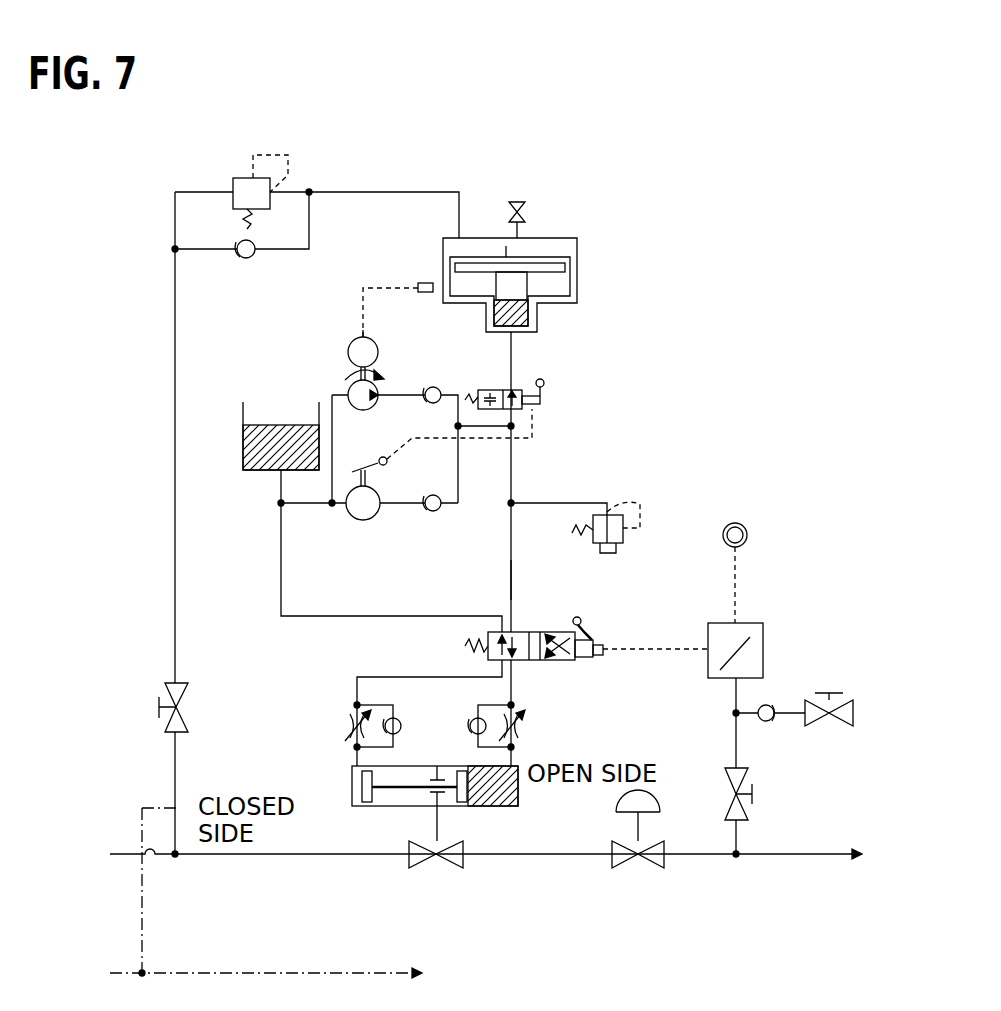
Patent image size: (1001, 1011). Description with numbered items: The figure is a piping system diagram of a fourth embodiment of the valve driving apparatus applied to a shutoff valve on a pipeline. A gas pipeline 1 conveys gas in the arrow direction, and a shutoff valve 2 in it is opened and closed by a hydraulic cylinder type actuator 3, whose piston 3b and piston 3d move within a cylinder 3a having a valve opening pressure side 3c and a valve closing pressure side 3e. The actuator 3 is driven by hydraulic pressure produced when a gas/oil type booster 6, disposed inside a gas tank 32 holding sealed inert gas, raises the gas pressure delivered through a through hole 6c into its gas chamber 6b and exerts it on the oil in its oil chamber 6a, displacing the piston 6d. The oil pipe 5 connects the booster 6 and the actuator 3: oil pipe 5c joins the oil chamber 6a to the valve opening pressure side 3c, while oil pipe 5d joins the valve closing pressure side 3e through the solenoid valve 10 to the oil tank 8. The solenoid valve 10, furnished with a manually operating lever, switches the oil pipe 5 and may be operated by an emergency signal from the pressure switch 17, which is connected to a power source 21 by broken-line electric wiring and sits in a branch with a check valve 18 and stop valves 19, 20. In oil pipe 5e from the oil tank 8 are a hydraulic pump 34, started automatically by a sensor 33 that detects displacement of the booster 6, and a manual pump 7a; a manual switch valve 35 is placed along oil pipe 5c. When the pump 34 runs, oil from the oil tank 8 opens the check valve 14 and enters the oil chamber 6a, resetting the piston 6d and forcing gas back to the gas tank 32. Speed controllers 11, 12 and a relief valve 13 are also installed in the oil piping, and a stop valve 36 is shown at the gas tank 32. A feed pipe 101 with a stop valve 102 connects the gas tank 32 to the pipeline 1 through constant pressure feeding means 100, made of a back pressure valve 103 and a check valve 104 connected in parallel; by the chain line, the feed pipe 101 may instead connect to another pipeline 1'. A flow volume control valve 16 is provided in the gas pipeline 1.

The gas pipeline 1 is at (486, 886).
The pipeline 1' is at (266, 908).
The shutoff valve 2 is at (448, 860).
The actuator 3 is at (404, 851).
The cylinder 3a is at (395, 806).
The piston 3b is at (460, 806).
The valve opening pressure side 3c is at (497, 800).
The piston 3d is at (366, 805).
The valve closing pressure side 3e is at (356, 797).
The oil pipe 5 is at (522, 486).
The oil pipe 5c is at (513, 580).
The oil pipe 5d is at (327, 618).
The oil pipe 5e is at (310, 505).
The gas/oil type booster 6 is at (550, 265).
The oil chamber 6a is at (532, 318).
The gas chamber 6b is at (576, 288).
The through hole 6c is at (509, 252).
The piston 6d is at (565, 266).
The manual pump 7a is at (373, 518).
The oil tank 8 is at (265, 472).
The solenoid valve 10 is at (565, 662).
The speed controller 11 is at (346, 728).
The speed controller 12 is at (525, 730).
The relief valve 13 is at (612, 514).
The check valve 14 is at (440, 388).
The flow volume control valve 16 is at (655, 870).
The pressure switch 17 is at (765, 636).
The check valve 18 is at (768, 722).
The stop valve 19 is at (748, 818).
The stop valve 20 is at (812, 728).
The power source 21 is at (748, 532).
The gas tank 32 is at (550, 265).
The sensor 33 is at (424, 282).
The hydraulic pump 34 is at (348, 390).
The manual switch valve 35 is at (545, 400).
The stop valve 36 is at (512, 212).
The constant pressure feeding means 100 is at (211, 228).
The feed pipe 101 is at (376, 191).
The stop valve 102 is at (185, 696).
The back pressure valve 103 is at (233, 180).
The check valve 104 is at (246, 259).